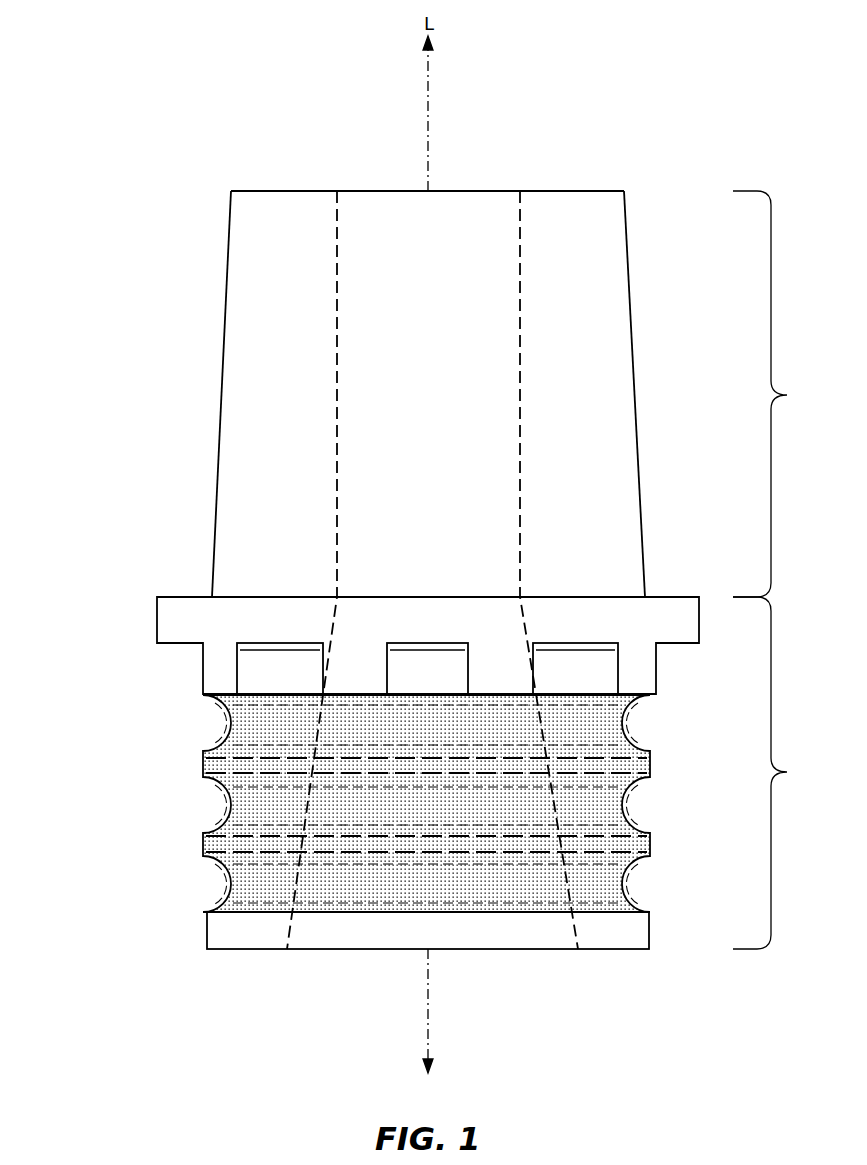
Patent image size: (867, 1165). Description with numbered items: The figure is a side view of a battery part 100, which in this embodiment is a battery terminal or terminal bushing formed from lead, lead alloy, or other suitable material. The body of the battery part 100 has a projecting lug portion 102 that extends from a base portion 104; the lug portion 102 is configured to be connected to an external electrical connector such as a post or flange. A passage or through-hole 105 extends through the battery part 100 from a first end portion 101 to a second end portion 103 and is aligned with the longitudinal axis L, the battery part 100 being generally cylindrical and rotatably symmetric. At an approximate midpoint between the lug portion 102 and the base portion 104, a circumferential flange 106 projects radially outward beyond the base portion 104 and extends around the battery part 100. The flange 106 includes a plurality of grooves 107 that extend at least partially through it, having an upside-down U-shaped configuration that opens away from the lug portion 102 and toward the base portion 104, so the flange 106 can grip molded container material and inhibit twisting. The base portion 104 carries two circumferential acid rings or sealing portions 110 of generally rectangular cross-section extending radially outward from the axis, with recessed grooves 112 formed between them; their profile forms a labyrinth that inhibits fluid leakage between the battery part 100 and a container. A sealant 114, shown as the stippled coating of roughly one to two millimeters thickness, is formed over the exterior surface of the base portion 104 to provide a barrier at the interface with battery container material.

The battery part 100 is at (135, 230).
The first end portion 101 is at (567, 198).
The lug portion 102 is at (615, 247).
The second end portion 103 is at (230, 923).
The base portion 104 is at (453, 773).
The through-hole 105 is at (378, 236).
The circumferential flange 106 is at (175, 615).
The grooves 107 is at (279, 660).
The sealing portions 110 is at (200, 761).
The grooves 112 is at (228, 723).
The sealant 114 is at (605, 805).